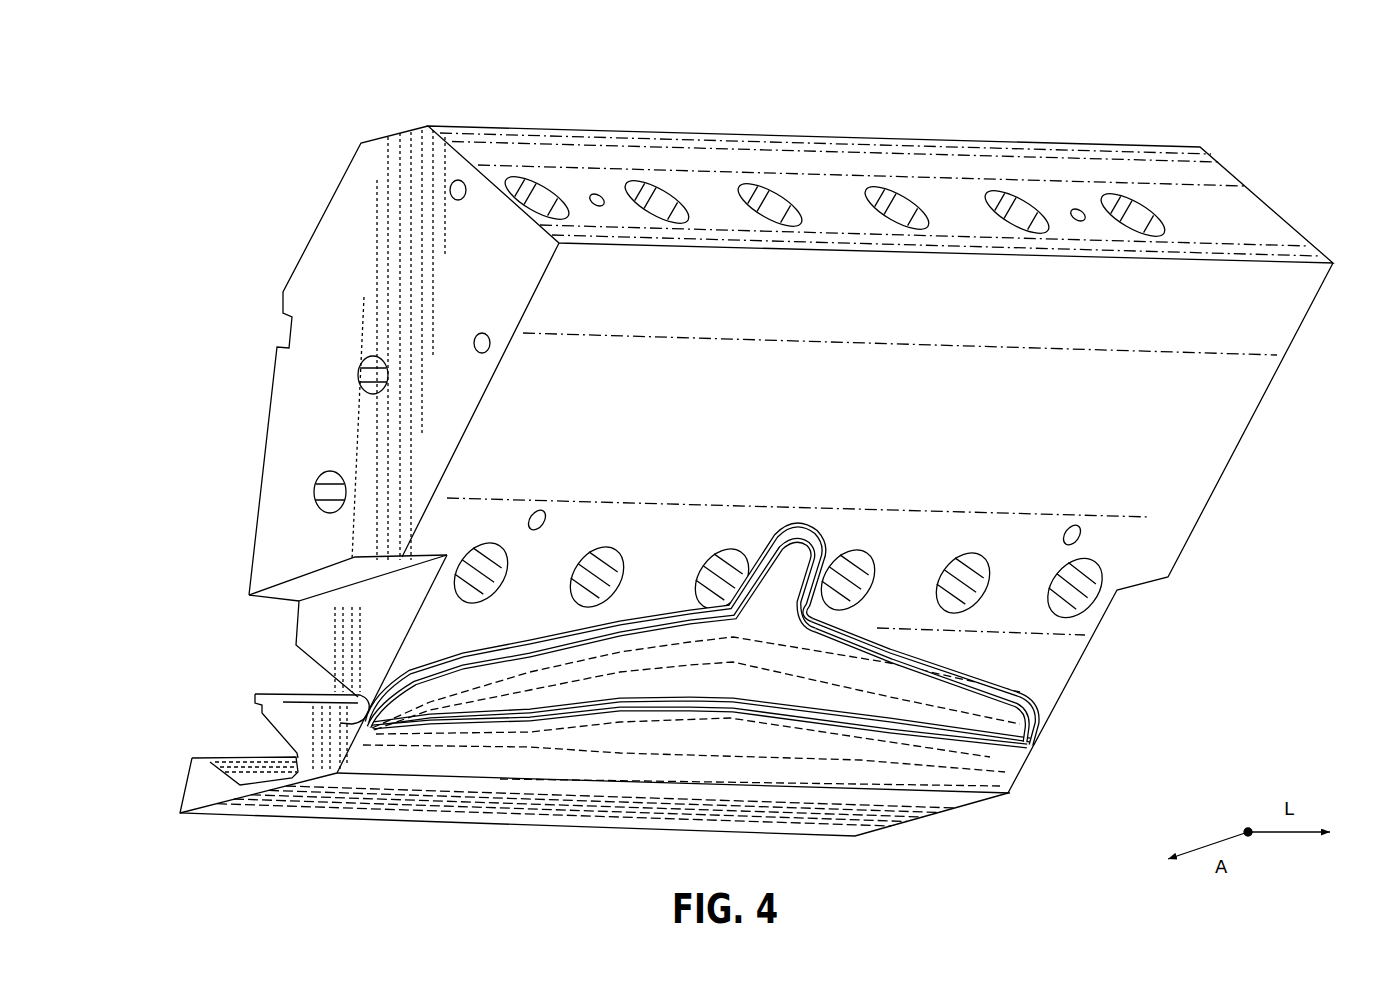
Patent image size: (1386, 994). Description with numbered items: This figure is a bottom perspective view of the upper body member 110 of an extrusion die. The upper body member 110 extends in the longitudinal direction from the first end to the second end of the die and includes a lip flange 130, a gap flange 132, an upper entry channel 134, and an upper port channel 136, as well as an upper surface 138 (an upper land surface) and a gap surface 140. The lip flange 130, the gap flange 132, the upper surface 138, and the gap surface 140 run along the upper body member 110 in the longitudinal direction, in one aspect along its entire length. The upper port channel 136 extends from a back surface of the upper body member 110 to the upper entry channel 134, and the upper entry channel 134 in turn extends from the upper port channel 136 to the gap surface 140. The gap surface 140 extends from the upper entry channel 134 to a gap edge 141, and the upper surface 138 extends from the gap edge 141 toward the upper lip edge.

The upper body member 110 is at (1303, 133).
The lip flange 130 is at (188, 786).
The gap flange 132 is at (279, 697).
The upper entry channel 134 is at (986, 697).
The upper port channel 136 is at (780, 576).
The upper surface 138 is at (908, 818).
The gap surface 140 is at (990, 758).
The gap edge 141 is at (966, 789).